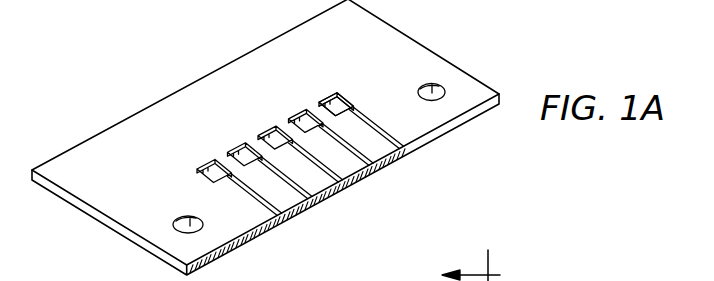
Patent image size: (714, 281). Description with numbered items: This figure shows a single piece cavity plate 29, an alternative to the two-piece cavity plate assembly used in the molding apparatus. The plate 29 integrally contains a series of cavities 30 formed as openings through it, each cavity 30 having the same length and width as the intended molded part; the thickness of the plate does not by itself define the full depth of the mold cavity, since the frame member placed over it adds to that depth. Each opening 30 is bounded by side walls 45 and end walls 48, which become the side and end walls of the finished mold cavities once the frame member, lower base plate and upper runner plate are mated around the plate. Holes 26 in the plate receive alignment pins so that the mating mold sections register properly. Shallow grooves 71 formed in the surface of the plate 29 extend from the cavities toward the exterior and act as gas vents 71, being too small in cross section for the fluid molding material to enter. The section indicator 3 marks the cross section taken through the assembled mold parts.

The single piece cavity plate 29 is at (412, 48).
The holes 26 is at (183, 217).
The end walls 48 is at (328, 94).
The side walls 45 is at (343, 95).
The cavities 30 is at (340, 106).
The grooves 71 is at (372, 175).
The section line for FIG. 3 is at (472, 265).